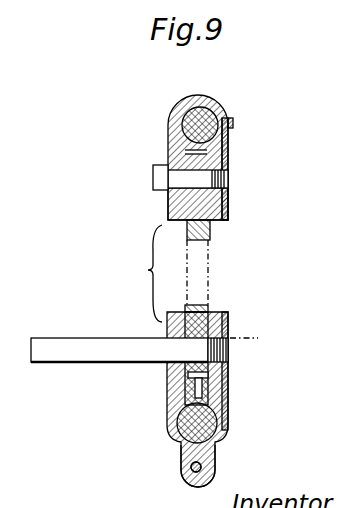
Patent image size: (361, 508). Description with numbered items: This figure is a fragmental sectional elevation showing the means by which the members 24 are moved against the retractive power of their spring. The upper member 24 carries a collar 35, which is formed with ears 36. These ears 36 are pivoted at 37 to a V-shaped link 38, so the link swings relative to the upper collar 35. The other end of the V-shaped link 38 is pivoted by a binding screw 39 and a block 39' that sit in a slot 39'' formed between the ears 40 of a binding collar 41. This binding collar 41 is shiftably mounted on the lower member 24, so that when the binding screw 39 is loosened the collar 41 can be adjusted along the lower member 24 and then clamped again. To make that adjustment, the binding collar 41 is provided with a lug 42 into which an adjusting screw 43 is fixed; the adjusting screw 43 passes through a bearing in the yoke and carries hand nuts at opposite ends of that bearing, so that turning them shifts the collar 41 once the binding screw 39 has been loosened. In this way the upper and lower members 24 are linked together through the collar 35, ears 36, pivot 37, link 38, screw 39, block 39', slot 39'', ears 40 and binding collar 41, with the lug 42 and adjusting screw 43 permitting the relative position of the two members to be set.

The member 24 is at (207, 110).
The collar 35 is at (182, 104).
The ears 36 is at (168, 212).
The pivot 37 is at (177, 178).
The V-shaped link 38 is at (212, 230).
The binding screw 39 is at (129, 333).
The block 39' is at (258, 342).
The slot 39'' is at (229, 399).
The ears 40 is at (228, 320).
The binding collar 41 is at (223, 423).
The lug 42 is at (185, 458).
The adjusting screw 43 is at (202, 467).